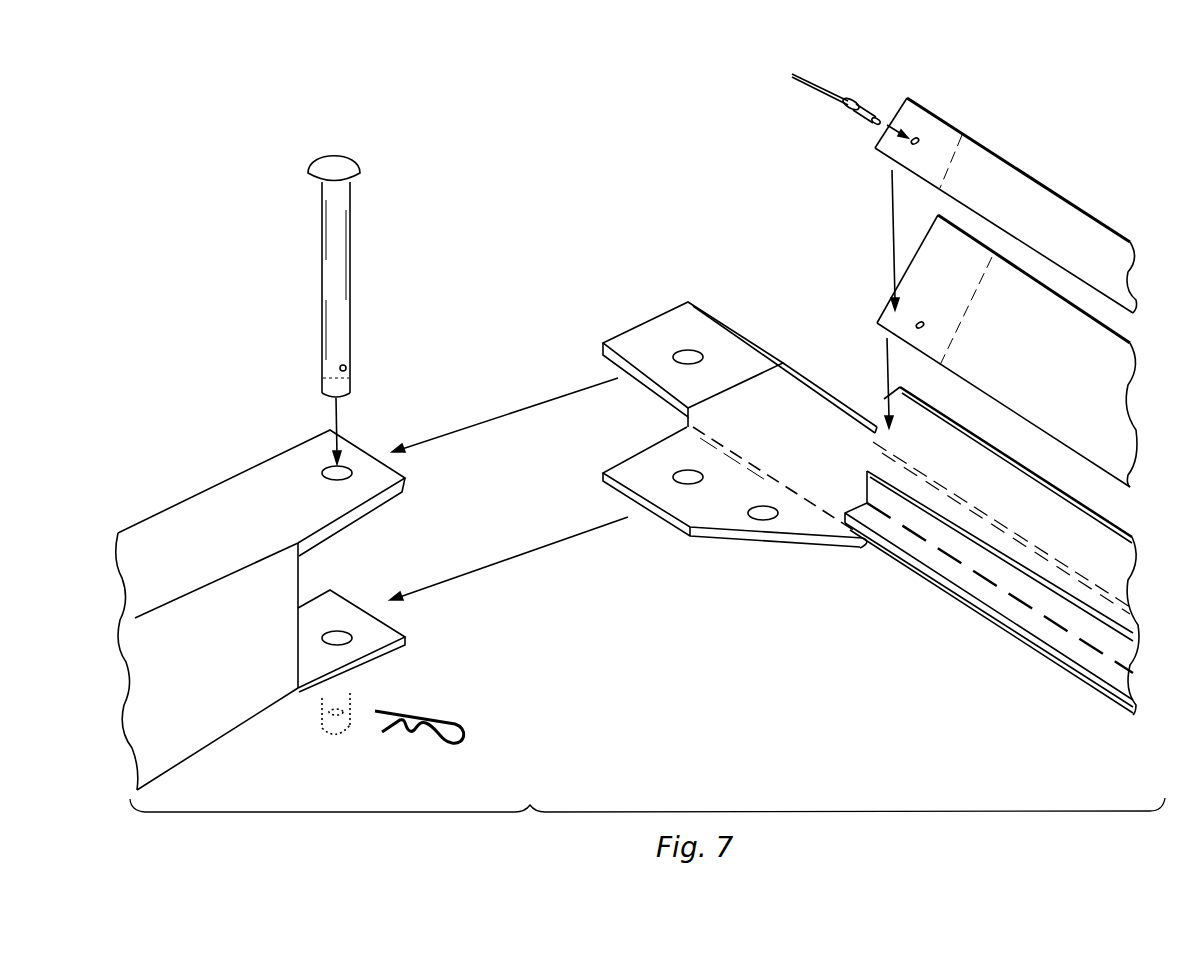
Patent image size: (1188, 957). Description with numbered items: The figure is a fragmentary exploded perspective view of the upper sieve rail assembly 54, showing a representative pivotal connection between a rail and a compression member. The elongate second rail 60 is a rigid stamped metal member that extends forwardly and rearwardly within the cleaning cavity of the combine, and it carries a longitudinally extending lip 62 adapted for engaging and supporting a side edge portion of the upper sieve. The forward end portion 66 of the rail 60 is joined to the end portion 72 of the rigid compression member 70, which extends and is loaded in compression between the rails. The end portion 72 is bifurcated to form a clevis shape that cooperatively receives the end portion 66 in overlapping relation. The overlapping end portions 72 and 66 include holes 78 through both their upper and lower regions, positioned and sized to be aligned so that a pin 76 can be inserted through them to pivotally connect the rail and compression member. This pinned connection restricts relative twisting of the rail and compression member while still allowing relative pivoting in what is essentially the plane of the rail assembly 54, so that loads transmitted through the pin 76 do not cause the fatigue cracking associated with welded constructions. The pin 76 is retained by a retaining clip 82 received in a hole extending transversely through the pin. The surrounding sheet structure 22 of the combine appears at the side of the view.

The wall panel 22 is at (1108, 157).
The upper sieve rail assembly 54 is at (647, 822).
The second rail 60 is at (823, 390).
The lip 62 is at (957, 600).
The second end portion 66 is at (737, 330).
The compression member 70 is at (260, 593).
The end portion 72 is at (305, 437).
The pin 76 is at (350, 215).
The holes 78 is at (345, 467).
The retaining clip 82 is at (355, 711).